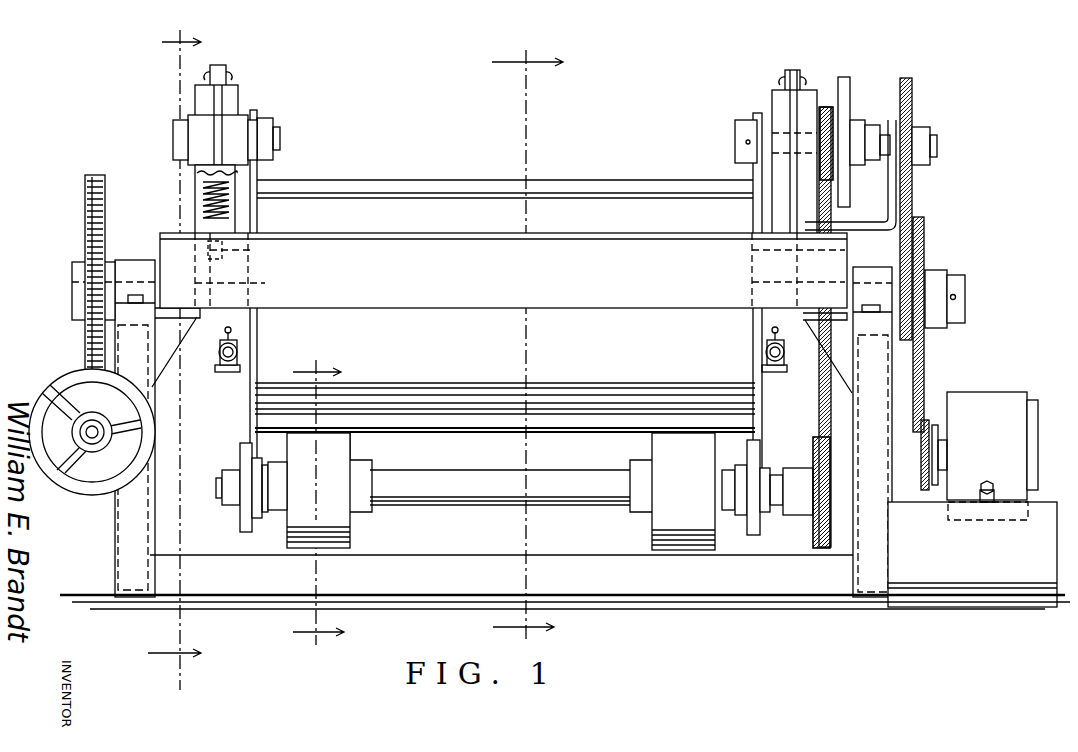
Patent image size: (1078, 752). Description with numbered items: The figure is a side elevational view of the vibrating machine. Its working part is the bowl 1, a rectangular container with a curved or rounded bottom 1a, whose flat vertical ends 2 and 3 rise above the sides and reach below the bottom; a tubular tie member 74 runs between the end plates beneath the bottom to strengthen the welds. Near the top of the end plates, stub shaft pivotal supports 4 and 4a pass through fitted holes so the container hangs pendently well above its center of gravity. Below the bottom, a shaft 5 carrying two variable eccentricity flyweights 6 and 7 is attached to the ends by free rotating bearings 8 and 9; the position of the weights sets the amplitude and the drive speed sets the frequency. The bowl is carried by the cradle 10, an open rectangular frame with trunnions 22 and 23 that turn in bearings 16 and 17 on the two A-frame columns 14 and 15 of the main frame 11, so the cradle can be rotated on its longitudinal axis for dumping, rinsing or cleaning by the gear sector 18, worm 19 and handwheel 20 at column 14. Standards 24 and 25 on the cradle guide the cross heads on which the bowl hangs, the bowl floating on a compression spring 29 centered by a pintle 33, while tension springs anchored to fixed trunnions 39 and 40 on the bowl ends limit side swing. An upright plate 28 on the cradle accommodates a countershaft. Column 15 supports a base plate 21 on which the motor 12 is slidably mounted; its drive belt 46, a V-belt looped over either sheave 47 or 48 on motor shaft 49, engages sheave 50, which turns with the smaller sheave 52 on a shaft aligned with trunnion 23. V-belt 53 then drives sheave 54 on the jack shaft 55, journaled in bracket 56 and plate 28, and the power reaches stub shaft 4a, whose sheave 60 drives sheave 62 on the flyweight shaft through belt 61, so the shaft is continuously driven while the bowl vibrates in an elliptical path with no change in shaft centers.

The bowl 1 is at (540, 360).
The curved or rounded bottom 1a is at (607, 402).
The bowl end 2 is at (257, 180).
The bowl end 3 is at (742, 172).
The stub shaft pivotal support 4 is at (282, 138).
The stub shaft pivotal support 4a is at (740, 130).
The shaft 5 is at (478, 524).
The variable eccentricity flyweight 6 is at (345, 530).
The variable eccentricity flyweight 7 is at (655, 525).
The free rotating bearing 8 is at (240, 495).
The free rotating bearing 9 is at (760, 510).
The cradle 10 is at (498, 280).
The main frame 11 is at (440, 587).
The motor 12 is at (995, 402).
The A frame column 14 is at (112, 545).
The A frame column 15 is at (880, 553).
The bearing 16 is at (133, 264).
The bearing 17 is at (858, 292).
The gear sector 18 is at (85, 212).
The worm 19 is at (70, 420).
The handwheel 20 is at (86, 490).
The base plate 21 is at (997, 572).
The trunnion 22 is at (245, 291).
The trunnion 23 is at (744, 298).
The standard 24 is at (237, 102).
The standard 25 is at (772, 100).
The upright plate 28 is at (795, 110).
The compression spring 29 is at (200, 198).
The pintle 33 is at (230, 250).
The fixed trunnion 39 is at (218, 360).
The fixed trunnion 40 is at (790, 370).
The drive belt 46 is at (920, 400).
The sheave 47 is at (900, 456).
The sheave 48 is at (935, 444).
The motor shaft 49 is at (945, 463).
The sheave 50 is at (925, 230).
The sheave 52 is at (910, 323).
The V-belt 53 is at (910, 195).
The sheave 54 is at (913, 83).
The jack shaft 55 is at (928, 140).
The bracket 56 is at (893, 182).
The sheave 60 is at (832, 118).
The belt 61 is at (818, 405).
The sheave 62 is at (815, 530).
The tubular tie member 74 is at (388, 418).